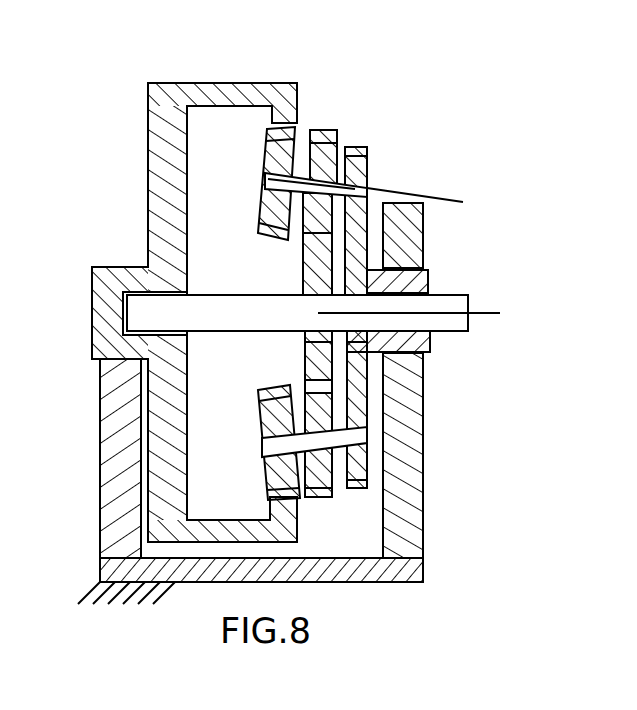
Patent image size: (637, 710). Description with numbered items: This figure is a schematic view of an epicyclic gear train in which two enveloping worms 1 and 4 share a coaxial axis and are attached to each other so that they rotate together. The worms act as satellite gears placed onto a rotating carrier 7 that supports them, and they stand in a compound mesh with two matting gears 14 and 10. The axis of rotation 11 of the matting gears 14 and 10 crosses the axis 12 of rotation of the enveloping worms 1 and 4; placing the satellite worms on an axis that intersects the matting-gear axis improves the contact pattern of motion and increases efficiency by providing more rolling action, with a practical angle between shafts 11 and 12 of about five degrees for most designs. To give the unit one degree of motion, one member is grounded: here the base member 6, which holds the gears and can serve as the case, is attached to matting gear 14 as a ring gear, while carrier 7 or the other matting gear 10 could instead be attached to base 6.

The enveloping worm 1 is at (277, 127).
The enveloping worm 4 is at (322, 128).
The base member 6 is at (112, 440).
The carrier 7 is at (368, 147).
The matting gear 10 is at (328, 372).
The axis of rotation 11 is at (489, 313).
The axis of rotation 12 is at (403, 197).
The matting gear 14 is at (253, 92).